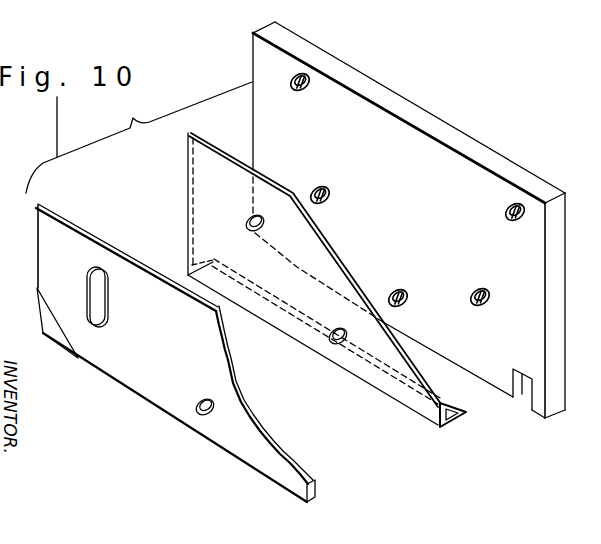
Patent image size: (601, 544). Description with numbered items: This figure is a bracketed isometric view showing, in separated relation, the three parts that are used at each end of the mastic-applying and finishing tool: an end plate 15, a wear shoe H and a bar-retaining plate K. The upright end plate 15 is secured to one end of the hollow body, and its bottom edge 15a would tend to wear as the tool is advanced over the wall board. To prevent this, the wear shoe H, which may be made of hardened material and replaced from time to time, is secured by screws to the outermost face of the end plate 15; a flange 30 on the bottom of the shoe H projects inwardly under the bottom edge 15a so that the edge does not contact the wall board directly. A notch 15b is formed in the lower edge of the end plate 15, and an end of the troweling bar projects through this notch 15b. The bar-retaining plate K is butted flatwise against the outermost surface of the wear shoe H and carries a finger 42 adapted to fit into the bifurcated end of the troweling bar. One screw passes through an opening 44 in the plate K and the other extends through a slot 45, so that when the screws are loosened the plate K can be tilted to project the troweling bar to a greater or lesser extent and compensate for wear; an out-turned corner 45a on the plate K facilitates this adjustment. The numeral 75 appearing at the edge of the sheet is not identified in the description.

The mounting plate 15 is at (427, 112).
The lower edge of plate 15a is at (440, 358).
The notch in plate 15b is at (523, 398).
The diagonal channel bar 30 is at (467, 391).
The angle plate H is at (185, 205).
The curved guide plate 42 is at (305, 477).
The hole 44 is at (205, 398).
The slot 45 is at (104, 307).
The gusset tab 45a is at (60, 345).
The direction arrow K is at (126, 372).
The reference 75 is at (600, 88).